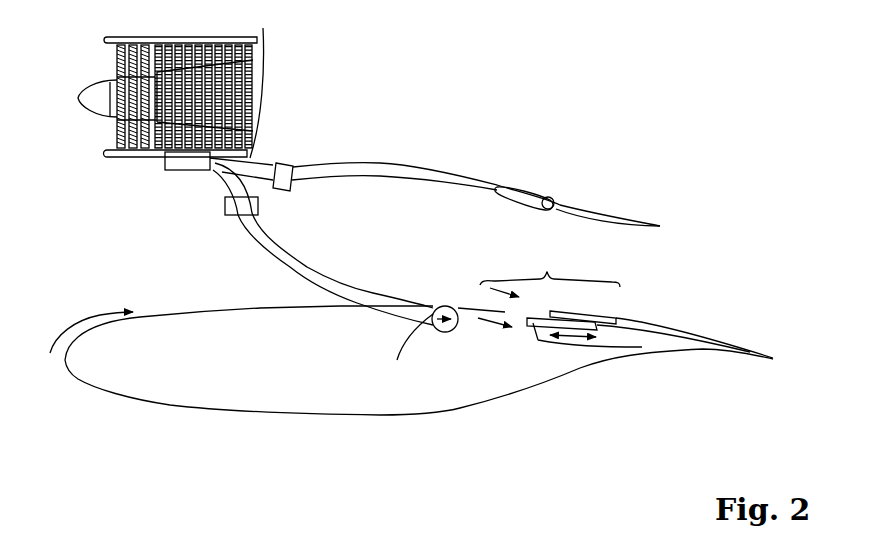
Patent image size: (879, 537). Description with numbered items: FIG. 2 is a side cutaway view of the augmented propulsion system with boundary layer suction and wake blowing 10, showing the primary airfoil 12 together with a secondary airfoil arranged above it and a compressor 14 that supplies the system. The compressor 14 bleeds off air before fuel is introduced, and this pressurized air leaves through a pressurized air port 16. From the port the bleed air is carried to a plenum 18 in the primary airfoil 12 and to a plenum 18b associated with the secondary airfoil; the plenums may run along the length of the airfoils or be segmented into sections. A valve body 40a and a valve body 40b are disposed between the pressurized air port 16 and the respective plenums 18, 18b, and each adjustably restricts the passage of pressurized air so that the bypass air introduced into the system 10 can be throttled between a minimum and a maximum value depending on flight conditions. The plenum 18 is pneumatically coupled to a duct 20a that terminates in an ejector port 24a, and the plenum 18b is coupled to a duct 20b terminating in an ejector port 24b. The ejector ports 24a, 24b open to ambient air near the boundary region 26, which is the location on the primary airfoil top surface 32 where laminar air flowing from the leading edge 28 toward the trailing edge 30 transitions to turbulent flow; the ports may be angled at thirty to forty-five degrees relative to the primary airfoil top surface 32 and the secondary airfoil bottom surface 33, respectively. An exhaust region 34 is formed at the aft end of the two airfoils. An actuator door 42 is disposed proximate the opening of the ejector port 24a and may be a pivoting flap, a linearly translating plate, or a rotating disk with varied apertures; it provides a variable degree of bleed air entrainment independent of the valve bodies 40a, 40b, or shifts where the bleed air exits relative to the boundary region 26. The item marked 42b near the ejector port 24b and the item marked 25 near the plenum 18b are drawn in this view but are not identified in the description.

The augmented propulsion system with boundary layer suction and wake blowing 10 is at (433, 66).
The primary airfoil 12 is at (643, 322).
The compressor 14 is at (118, 157).
The pressurized air port 16 is at (190, 170).
The plenum 18 is at (447, 332).
The plenum 18b is at (548, 197).
The duct 20a is at (472, 321).
The duct 20b is at (560, 214).
The ejector port 24a is at (523, 298).
The ejector port 24b is at (560, 210).
The nozzle 25 is at (528, 231).
The boundary region 26 is at (550, 271).
The leading edge 28 is at (62, 393).
The trailing edge 30 is at (785, 361).
The primary airfoil top surface 32 is at (163, 305).
The secondary airfoil bottom surface 33 is at (620, 227).
The exhaust region 34 is at (745, 276).
The valve body 40a is at (266, 202).
The valve body 40b is at (282, 162).
The actuator door 42 is at (620, 313).
The slat 42b is at (579, 186).